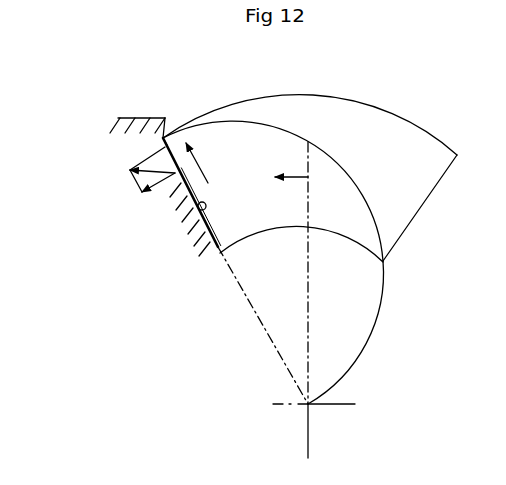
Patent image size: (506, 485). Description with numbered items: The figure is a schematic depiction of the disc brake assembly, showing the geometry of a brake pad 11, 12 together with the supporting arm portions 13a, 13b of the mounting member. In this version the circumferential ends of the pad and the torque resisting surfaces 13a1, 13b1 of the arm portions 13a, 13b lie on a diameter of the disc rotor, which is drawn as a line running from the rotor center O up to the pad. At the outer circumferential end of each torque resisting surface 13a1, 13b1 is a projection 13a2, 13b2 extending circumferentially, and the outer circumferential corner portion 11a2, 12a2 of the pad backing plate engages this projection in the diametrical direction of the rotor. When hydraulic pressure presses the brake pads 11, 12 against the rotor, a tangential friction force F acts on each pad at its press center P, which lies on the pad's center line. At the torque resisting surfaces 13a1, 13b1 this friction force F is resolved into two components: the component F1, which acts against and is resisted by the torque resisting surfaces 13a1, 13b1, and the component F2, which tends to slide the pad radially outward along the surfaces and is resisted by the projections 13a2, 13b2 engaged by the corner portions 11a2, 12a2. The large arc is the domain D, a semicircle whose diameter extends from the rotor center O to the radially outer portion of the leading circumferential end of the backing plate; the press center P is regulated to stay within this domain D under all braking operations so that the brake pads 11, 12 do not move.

The brake pad 11 is at (320, 177).
The brake pad 12 is at (320, 177).
The arm portion 13a is at (166, 87).
The arm portion 13b is at (166, 87).
The torque resisting surface 13a1 is at (184, 271).
The torque resisting surface 13b1 is at (199, 209).
The projection 13a2 is at (228, 106).
The projection 13b2 is at (228, 106).
The outer circumferential corner portion 11a2 is at (102, 148).
The outer circumferential corner portion 12a2 is at (102, 148).
The domain D is at (367, 332).
The rotor center O is at (314, 431).
The press center P is at (315, 273).
The friction force F is at (208, 168).
The force component F1 is at (152, 193).
The force component F2 is at (187, 163).